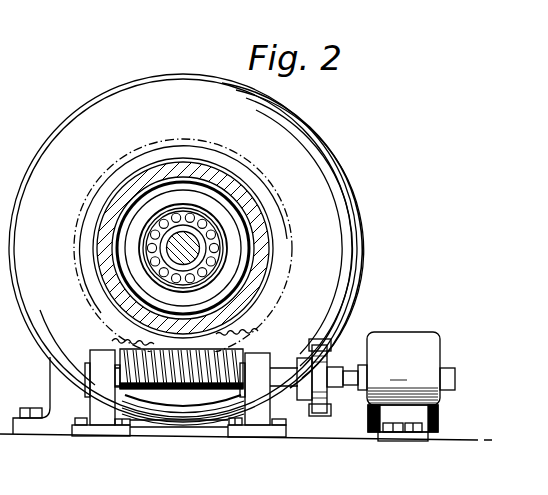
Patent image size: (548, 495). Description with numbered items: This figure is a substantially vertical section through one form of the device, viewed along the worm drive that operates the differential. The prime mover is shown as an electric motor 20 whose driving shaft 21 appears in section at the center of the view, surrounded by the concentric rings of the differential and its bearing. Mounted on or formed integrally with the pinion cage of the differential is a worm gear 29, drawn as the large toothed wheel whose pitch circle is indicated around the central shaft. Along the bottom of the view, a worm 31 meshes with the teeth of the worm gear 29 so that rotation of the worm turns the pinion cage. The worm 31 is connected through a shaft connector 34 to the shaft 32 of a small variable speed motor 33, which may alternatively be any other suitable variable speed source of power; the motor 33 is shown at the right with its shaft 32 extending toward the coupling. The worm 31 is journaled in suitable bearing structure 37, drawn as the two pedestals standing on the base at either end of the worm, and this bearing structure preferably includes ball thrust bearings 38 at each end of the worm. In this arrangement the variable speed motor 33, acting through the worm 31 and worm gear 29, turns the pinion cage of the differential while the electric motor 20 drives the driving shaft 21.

The electric motor 20 is at (334, 214).
The driving shaft 21 is at (186, 236).
The worm gear 29 is at (83, 282).
The worm 31 is at (168, 413).
The shaft 32 is at (353, 368).
The variable speed motor 33 is at (400, 332).
The shaft connector 34 is at (325, 418).
The bearing structure 37 is at (105, 416).
The ball thrust bearings 38 is at (112, 343).